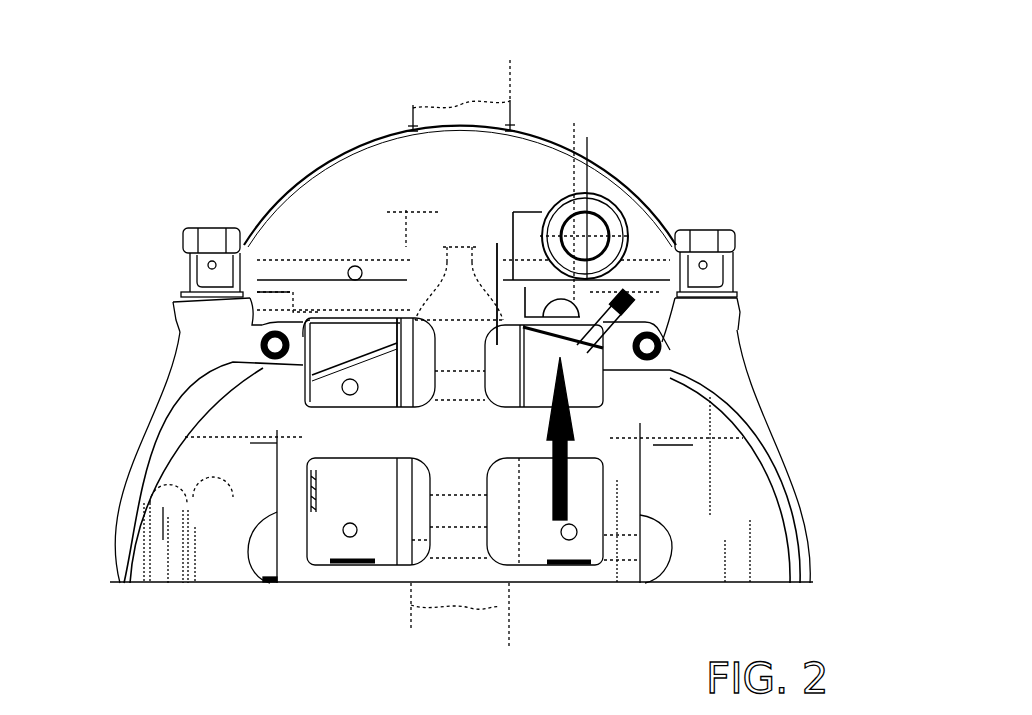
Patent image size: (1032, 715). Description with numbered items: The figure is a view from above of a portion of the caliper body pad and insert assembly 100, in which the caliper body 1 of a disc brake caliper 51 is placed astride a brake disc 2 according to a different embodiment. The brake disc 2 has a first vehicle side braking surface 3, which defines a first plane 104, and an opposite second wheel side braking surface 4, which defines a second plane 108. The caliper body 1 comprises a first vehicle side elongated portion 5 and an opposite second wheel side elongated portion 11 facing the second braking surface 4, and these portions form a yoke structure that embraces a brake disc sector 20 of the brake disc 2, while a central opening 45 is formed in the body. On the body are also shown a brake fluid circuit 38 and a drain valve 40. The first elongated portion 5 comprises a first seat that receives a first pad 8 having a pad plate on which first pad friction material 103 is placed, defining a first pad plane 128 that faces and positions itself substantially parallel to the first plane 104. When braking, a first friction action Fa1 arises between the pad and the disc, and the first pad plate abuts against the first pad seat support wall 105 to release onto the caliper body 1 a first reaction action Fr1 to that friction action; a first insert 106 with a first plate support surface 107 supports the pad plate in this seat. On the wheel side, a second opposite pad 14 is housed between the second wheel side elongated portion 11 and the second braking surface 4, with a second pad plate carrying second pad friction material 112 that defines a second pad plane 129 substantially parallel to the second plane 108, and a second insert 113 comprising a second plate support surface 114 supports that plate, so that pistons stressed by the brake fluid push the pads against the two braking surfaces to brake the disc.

The caliper body 1 is at (756, 408).
The brake disc 2 is at (427, 97).
The first vehicle side braking surface 3 is at (517, 107).
The opposite second wheel side braking surface 4 is at (410, 129).
The first vehicle side elongated portion 5 is at (701, 540).
The first pad 8 is at (611, 548).
The second wheel side elongated portion 11 is at (188, 441).
The second opposite pad 14 is at (305, 483).
The brake disc sector housed in caliper body 20 is at (318, 537).
The brake fluid circuit 38 is at (736, 283).
The drain valve 40 is at (178, 250).
The central opening 45 is at (372, 552).
The disc brake caliper 51 is at (234, 126).
The caliper body pad and insert assembly 100 is at (678, 186).
The first pad friction material 103 is at (498, 245).
The first plane defined by the first braking surface 104 is at (511, 95).
The first pad seat support wall 105 is at (637, 230).
The first insert 106 is at (688, 235).
The first plate support surface 107 is at (740, 350).
The second plane defined by the second braking surface 108 is at (413, 102).
The second pad friction material 112 is at (353, 265).
The second insert 113 is at (300, 295).
The second plate support surface 114 is at (330, 318).
The first pad plane 128 is at (504, 548).
The second pad plane 129 is at (421, 550).
The first reaction action Fr1 is at (575, 132).
The first friction action Fa1 is at (536, 438).